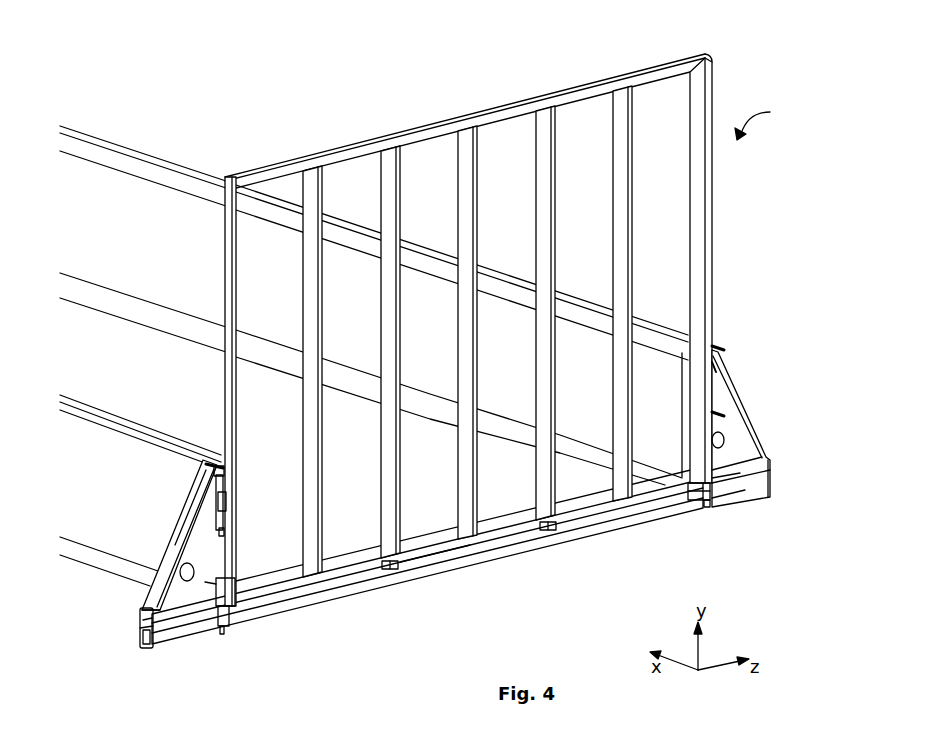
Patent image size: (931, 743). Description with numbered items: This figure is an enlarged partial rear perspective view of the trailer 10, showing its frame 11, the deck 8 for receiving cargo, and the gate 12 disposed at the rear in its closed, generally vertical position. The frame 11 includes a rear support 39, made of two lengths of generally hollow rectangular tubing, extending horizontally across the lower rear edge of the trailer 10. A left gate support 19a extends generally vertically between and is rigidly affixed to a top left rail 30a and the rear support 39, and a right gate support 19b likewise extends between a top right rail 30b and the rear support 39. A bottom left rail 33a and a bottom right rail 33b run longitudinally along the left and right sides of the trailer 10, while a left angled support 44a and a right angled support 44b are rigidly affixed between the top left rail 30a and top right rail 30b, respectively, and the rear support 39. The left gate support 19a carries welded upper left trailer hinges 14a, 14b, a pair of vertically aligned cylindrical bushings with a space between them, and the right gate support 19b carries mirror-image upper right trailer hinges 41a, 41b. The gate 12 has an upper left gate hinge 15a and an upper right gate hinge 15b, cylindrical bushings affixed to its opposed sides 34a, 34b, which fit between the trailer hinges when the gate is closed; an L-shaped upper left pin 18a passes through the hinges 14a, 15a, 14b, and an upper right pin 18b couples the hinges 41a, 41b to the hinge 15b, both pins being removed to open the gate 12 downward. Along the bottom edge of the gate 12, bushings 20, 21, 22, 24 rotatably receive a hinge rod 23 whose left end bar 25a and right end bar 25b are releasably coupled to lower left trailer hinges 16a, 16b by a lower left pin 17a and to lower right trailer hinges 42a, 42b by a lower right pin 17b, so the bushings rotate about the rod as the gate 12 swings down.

The deck 8 is at (162, 389).
The trailer 10 is at (767, 121).
The frame 11 is at (137, 153).
The gate 12 is at (700, 267).
The upper left trailer hinge 14a is at (226, 483).
The upper left trailer hinge 14b is at (233, 526).
The upper left gate hinge 15a is at (215, 512).
The upper right gate hinge 15b is at (718, 396).
The lower left trailer hinge 16a is at (236, 585).
The lower left trailer hinge 16b is at (234, 620).
The lower left pin 17a is at (148, 600).
The lower right pin 17b is at (760, 440).
The upper left pin 18a is at (207, 470).
The upper right pin 18b is at (720, 348).
The left gate support 19a is at (210, 530).
The right gate support 19b is at (688, 408).
The bushing 20 is at (245, 613).
The bushing 21 is at (398, 570).
The bushing 22 is at (555, 531).
The hinge rod 23 is at (440, 553).
The bushing 24 is at (697, 492).
The left end bar 25a is at (218, 632).
The right end bar 25b is at (710, 501).
The top left rail 30a is at (87, 405).
The top right rail 30b is at (560, 292).
The bottom left rail 33a is at (85, 548).
The bottom right rail 33b is at (565, 445).
The left side of the gate 34a is at (227, 405).
The right side of the gate 34b is at (710, 203).
The rear support 39 is at (137, 622).
The upper right trailer hinge 41a is at (716, 368).
The upper right trailer hinge 41b is at (720, 417).
The lower right trailer hinge 42a is at (712, 484).
The lower right trailer hinge 42b is at (712, 498).
The left angled support 44a is at (190, 500).
The right angled support 44b is at (762, 468).